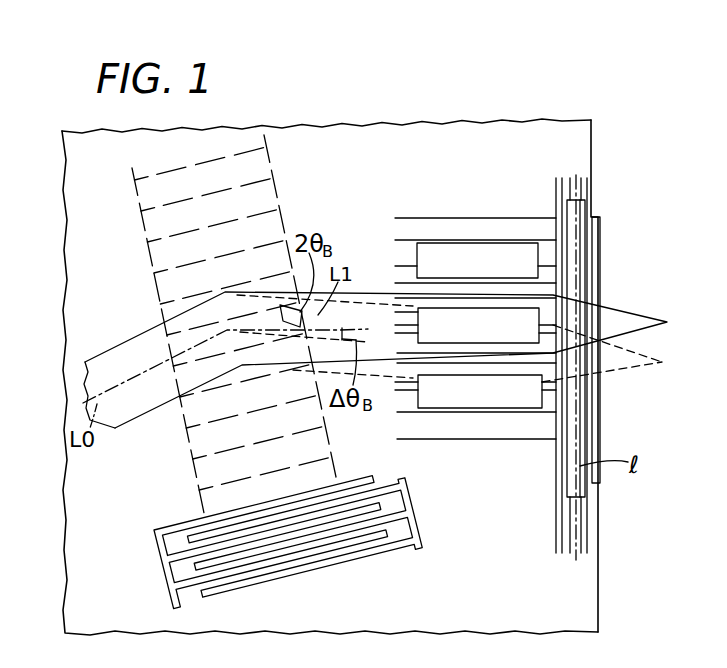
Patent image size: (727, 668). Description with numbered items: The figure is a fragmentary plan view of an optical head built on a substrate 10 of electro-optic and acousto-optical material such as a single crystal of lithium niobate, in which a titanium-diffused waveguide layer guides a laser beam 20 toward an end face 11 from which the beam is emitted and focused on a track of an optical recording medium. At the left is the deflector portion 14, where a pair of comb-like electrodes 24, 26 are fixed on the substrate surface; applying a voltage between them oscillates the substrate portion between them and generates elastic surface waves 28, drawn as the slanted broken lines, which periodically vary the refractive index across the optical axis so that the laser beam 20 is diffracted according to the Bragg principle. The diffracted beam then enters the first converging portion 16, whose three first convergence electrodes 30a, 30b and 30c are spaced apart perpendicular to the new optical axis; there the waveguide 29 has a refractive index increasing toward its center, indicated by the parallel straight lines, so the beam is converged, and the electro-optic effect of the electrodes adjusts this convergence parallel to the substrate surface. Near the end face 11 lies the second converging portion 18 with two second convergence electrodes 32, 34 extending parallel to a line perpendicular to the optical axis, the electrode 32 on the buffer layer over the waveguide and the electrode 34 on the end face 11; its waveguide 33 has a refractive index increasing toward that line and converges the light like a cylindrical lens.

The substrate 10 is at (336, 128).
The end face 11 is at (600, 607).
The deflector portion 14 is at (118, 196).
The first converging portion 16 is at (445, 448).
The second converging portion 18 is at (548, 455).
The laser beam 20 is at (102, 357).
The comb-like electrode 24 is at (160, 573).
The comb-like electrode 26 is at (397, 543).
The elastic surface waves 28 is at (255, 182).
The waveguide 29 is at (405, 282).
The first convergence electrode 30a is at (443, 335).
The first convergence electrode 30b is at (462, 250).
The first convergence electrode 30c is at (482, 400).
The second convergence electrode 32 is at (580, 430).
The waveguide 33 is at (580, 520).
The second convergence electrode 34 is at (599, 399).